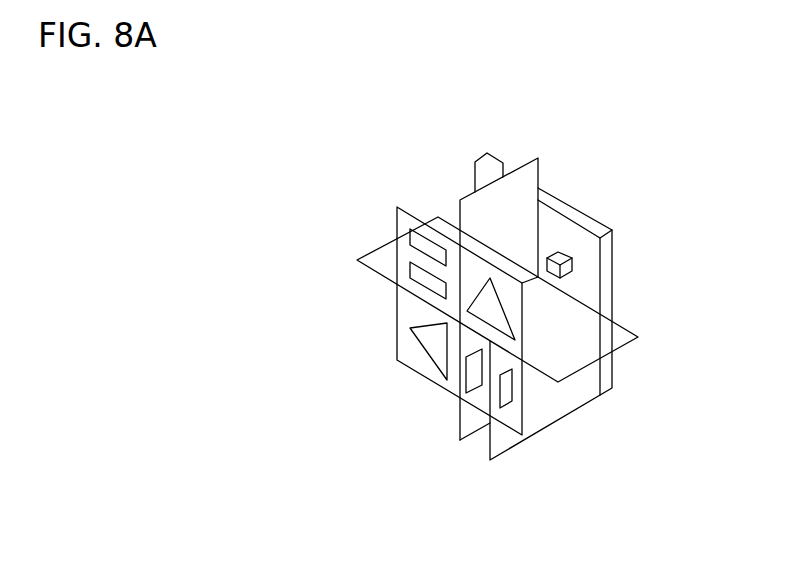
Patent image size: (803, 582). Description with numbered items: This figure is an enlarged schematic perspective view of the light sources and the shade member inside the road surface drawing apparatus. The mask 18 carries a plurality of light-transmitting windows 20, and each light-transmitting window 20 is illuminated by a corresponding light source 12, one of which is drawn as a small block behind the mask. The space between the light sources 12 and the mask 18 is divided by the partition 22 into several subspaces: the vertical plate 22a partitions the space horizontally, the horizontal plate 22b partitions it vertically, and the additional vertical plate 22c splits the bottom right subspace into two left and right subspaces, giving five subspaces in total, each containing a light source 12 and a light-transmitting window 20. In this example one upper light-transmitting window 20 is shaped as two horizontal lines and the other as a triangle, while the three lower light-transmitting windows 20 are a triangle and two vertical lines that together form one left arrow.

The light source 12 is at (561, 253).
The mask 18 is at (473, 264).
The light-transmitting window 20 is at (405, 261).
The partition 22 is at (497, 368).
The vertical plate 22a is at (471, 423).
The horizontal plate 22b is at (570, 358).
The additional vertical plate 22c is at (506, 438).